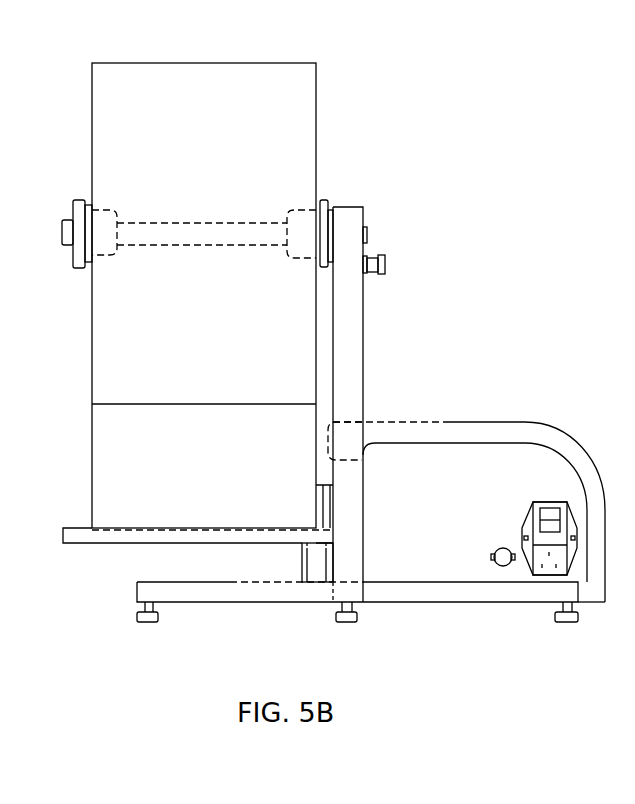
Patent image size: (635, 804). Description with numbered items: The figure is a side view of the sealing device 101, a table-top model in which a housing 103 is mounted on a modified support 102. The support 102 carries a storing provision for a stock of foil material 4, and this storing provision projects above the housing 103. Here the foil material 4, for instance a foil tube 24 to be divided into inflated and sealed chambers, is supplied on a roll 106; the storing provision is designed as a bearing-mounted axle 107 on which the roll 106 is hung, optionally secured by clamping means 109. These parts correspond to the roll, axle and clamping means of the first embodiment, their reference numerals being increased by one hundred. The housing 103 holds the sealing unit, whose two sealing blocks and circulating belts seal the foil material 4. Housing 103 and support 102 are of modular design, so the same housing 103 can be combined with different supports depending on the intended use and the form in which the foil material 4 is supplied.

The sealing device 101 is at (509, 128).
The support 102 is at (355, 322).
The housing 103 is at (442, 465).
The roll 106 is at (295, 104).
The bearing-mounted axle 107 is at (185, 232).
The clamping means 109 is at (103, 225).
The foil material 4 is at (169, 493).
The foil tube 24 is at (107, 465).